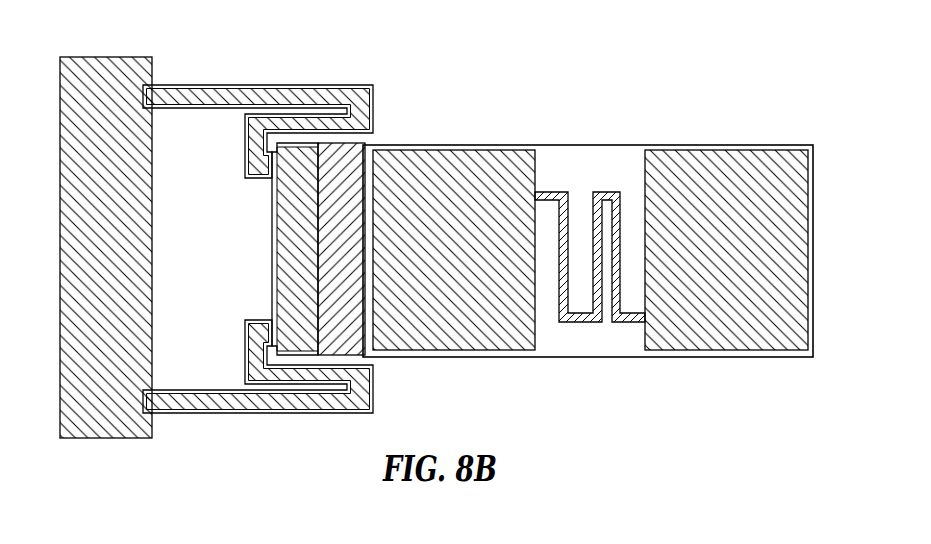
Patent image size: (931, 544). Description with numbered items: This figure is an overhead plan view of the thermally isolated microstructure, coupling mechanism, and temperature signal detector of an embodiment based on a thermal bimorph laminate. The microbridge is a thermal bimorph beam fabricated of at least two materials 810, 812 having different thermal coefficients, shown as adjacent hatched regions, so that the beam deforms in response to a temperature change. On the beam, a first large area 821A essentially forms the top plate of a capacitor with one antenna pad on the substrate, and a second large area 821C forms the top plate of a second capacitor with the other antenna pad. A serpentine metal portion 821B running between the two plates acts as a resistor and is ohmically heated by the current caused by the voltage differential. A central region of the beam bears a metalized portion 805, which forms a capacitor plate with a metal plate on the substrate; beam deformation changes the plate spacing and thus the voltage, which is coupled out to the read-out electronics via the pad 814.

The pad 814 is at (109, 57).
The metalized portion 805 is at (279, 92).
The first material of thermal bimorph beam 810 is at (367, 150).
The second material of thermal bimorph beam 812 is at (605, 347).
The first large area of top metal layer 821A is at (457, 150).
The serpentine metal portion 821B is at (610, 192).
The second large area of top metal layer 821C is at (727, 150).